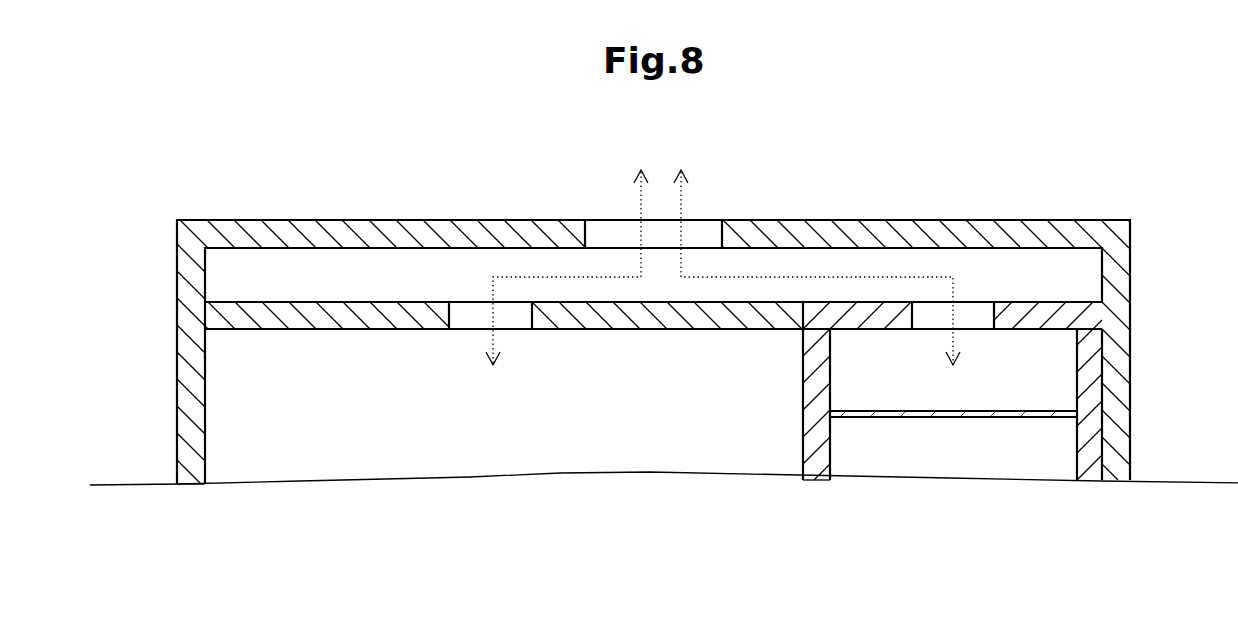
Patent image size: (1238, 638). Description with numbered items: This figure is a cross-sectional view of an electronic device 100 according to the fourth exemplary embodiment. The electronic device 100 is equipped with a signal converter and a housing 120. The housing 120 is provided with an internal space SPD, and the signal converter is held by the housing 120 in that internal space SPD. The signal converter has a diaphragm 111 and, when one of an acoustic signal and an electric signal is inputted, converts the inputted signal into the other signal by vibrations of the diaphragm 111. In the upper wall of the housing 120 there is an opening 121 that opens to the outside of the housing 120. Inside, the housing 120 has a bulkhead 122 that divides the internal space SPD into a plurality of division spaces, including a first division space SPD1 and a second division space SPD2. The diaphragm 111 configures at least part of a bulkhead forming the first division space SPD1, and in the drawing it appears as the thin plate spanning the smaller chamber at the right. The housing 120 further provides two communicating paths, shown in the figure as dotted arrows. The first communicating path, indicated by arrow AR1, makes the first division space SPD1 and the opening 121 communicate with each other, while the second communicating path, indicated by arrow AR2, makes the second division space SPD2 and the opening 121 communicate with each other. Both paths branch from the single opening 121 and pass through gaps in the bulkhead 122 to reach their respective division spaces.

The electronic device 100 is at (303, 119).
The housing 120 is at (1031, 220).
The opening 121 is at (588, 232).
The bulkhead 122 is at (275, 330).
The diaphragm 111 is at (1041, 417).
The internal space SPD is at (732, 393).
The first division space SPD1 is at (998, 380).
The second division space SPD2 is at (362, 427).
The first communicating path AR1 is at (681, 205).
The second communicating path AR2 is at (641, 205).